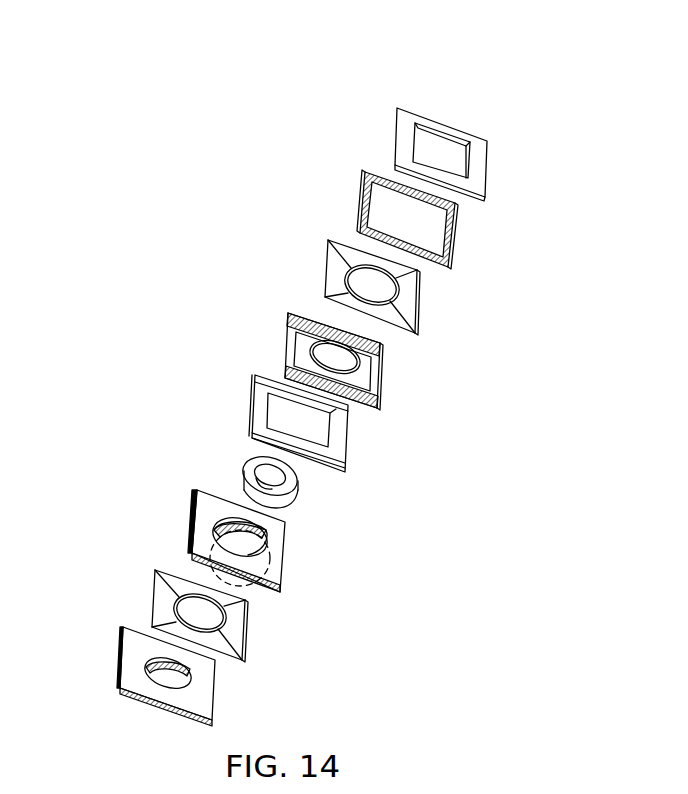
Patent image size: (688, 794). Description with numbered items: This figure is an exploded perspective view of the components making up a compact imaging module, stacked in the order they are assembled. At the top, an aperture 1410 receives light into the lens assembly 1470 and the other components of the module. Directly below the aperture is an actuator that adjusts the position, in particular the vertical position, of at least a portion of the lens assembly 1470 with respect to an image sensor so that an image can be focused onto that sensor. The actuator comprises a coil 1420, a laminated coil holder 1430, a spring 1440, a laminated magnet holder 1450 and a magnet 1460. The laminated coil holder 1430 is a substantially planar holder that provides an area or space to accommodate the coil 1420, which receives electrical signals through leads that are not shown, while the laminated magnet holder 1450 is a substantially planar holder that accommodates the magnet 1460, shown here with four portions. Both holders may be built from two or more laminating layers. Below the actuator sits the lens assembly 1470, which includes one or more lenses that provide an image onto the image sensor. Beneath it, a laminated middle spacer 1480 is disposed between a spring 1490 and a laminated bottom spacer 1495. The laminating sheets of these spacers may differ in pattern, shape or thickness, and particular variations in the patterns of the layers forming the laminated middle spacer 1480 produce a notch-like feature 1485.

The aperture 1410 is at (470, 118).
The coil 1420 is at (487, 153).
The laminated coil holder 1430 is at (455, 235).
The spring 1440 is at (417, 298).
The laminated magnet holder 1450 is at (380, 378).
The magnet 1460 is at (348, 440).
The lens assembly 1470 is at (297, 500).
The laminated middle spacer 1480 is at (285, 547).
The notch-like feature 1485 is at (217, 537).
The spring 1490 is at (245, 623).
The laminated bottom spacer 1495 is at (215, 693).